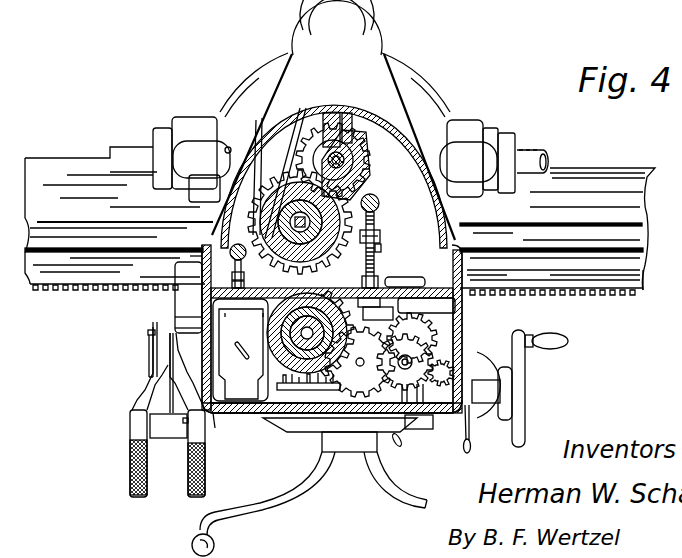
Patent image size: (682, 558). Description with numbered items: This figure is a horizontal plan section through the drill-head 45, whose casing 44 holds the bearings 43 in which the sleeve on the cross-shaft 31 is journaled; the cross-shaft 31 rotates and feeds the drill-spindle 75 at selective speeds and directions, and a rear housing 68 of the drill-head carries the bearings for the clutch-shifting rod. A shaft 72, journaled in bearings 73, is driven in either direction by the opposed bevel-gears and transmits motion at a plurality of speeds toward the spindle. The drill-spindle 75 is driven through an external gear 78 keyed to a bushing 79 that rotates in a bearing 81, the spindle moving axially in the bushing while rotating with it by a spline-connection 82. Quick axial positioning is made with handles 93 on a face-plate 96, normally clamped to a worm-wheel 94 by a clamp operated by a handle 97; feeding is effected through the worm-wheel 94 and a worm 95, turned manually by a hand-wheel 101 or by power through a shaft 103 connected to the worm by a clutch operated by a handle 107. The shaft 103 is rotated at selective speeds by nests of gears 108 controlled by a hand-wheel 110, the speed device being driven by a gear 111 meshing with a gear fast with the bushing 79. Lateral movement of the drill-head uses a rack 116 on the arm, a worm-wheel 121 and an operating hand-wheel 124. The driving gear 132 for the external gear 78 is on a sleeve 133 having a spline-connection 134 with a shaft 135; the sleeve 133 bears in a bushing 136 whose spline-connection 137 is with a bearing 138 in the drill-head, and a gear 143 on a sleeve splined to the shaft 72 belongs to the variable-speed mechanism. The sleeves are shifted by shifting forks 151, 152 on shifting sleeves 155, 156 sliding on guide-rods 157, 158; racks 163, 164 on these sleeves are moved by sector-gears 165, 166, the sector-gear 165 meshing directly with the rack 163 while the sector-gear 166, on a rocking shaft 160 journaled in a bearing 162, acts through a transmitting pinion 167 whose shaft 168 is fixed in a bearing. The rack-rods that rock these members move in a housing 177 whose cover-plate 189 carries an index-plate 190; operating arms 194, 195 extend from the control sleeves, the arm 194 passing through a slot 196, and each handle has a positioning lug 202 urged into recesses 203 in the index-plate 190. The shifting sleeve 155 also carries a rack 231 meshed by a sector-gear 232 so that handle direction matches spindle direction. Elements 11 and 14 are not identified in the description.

The rail 11 is at (633, 280).
The rail bar 14 is at (622, 167).
The cross-shaft 31 is at (537, 153).
The bearings 43 is at (193, 120).
The casing 44 is at (463, 310).
The drill-head 45 is at (220, 425).
The rear housing 68 is at (385, 35).
The shaft 72 is at (345, 150).
The bearings 73 is at (352, 158).
The drill-spindle 75 is at (188, 316).
The external gear 78 is at (240, 350).
The bushing 79 is at (270, 353).
The bearing 81 is at (263, 332).
The spline-connection 82 is at (342, 368).
The handles 93 is at (265, 507).
The worm-wheel 94 is at (278, 386).
The worm 95 is at (474, 368).
The face-plate 96 is at (310, 432).
The handle 97 is at (399, 447).
The hand-wheel 101 is at (457, 357).
The shaft 103 is at (447, 386).
The handle 107 is at (468, 434).
The nests of gears 108 is at (391, 395).
The hand-wheel 110 is at (417, 430).
The gear 111 is at (342, 390).
The rack 116 is at (630, 293).
The worm-wheel 121 is at (424, 336).
The hand-wheel 124 is at (525, 363).
The driving gear 132 is at (276, 160).
The sleeve 133 is at (268, 175).
The spline-connection 134 is at (347, 287).
The shaft 135 is at (297, 150).
The bushing 136 is at (236, 185).
The spline-connection 137 is at (330, 113).
The bearing 138 is at (226, 148).
The gear 143 is at (368, 160).
The shifting fork 151 is at (200, 262).
The shifting fork 152 is at (377, 199).
The shifting sleeve 155 is at (205, 228).
The shifting sleeve 156 is at (468, 162).
The guide-rod 157 is at (201, 159).
The guide-rod 158 is at (378, 207).
The rocking member 160 is at (381, 250).
The bearing 162 is at (414, 274).
The rack 163 is at (232, 250).
The rack 164 is at (530, 211).
The sector-gear 165 is at (182, 288).
The sector-gear 166 is at (378, 277).
The transmitting pinion 167 is at (377, 250).
The shaft 168 is at (380, 233).
The housing 177 is at (180, 318).
The cover-plate 189 is at (153, 352).
The slot 196 is at (160, 385).
The positioning lug 202 is at (150, 430).
The recesses 203 is at (172, 425).
The index-plate 190 is at (175, 436).
The operating arm 194 is at (130, 478).
The operating arm 195 is at (206, 476).
The rack 231 is at (232, 250).
The sector-gear 232 is at (204, 188).